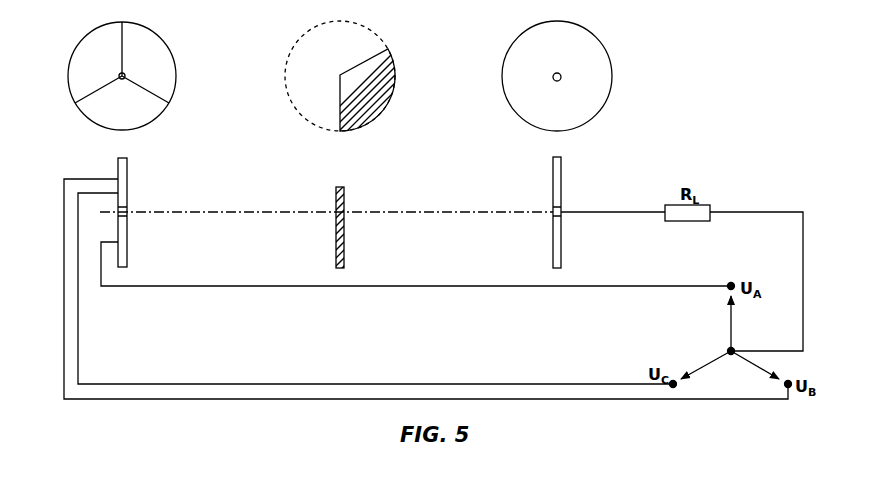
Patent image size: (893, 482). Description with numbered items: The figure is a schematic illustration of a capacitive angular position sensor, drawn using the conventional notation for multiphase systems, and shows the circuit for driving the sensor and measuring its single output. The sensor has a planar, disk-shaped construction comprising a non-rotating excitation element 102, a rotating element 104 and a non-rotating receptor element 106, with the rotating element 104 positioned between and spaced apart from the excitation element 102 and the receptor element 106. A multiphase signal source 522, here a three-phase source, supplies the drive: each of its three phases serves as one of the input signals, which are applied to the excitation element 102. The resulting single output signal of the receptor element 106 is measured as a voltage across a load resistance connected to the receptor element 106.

The excitation element 102 is at (127, 188).
The rotating element 104 is at (336, 197).
The receptor element 106 is at (553, 198).
The multiphase signal source 522 is at (704, 343).